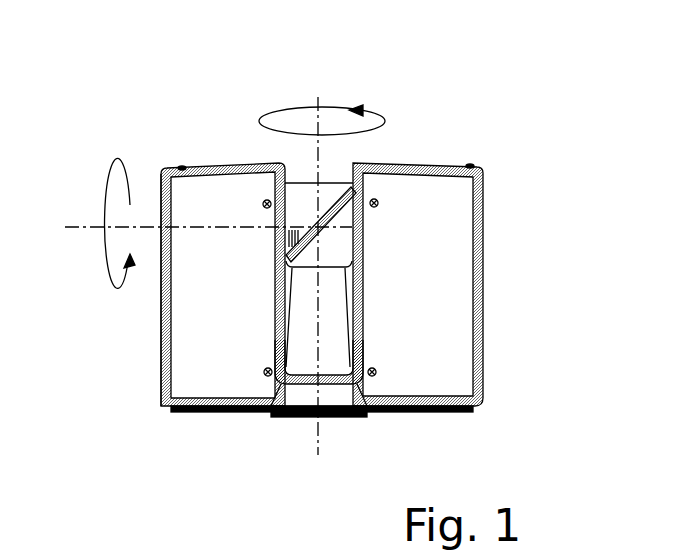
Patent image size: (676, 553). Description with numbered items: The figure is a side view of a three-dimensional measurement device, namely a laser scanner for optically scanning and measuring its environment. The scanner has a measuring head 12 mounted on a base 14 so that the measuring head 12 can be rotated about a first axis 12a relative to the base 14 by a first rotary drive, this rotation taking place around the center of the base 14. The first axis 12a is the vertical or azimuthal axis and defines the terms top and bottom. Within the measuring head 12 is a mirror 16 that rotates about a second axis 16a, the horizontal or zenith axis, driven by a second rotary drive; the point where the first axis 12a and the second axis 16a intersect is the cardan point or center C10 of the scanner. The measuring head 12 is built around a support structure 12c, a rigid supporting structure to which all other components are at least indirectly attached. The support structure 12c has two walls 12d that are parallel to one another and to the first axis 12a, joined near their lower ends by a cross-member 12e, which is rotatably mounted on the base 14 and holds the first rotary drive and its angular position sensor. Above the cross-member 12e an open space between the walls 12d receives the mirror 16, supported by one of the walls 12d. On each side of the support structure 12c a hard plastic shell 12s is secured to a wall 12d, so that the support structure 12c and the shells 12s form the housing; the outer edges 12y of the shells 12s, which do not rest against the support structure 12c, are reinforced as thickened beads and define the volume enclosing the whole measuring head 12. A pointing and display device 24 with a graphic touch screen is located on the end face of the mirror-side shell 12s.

The measuring head 12 is at (158, 334).
The first axis 12a is at (323, 148).
The support structure 12c is at (374, 341).
The walls 12d is at (272, 280).
The cross-member 12e is at (352, 396).
The shell 12s is at (178, 367).
The outer edges 12y is at (158, 297).
The base 14 is at (309, 418).
The mirror 16 is at (345, 192).
The second axis 16a is at (82, 224).
The pointing and display device 24 is at (162, 188).
The center C10 is at (318, 228).